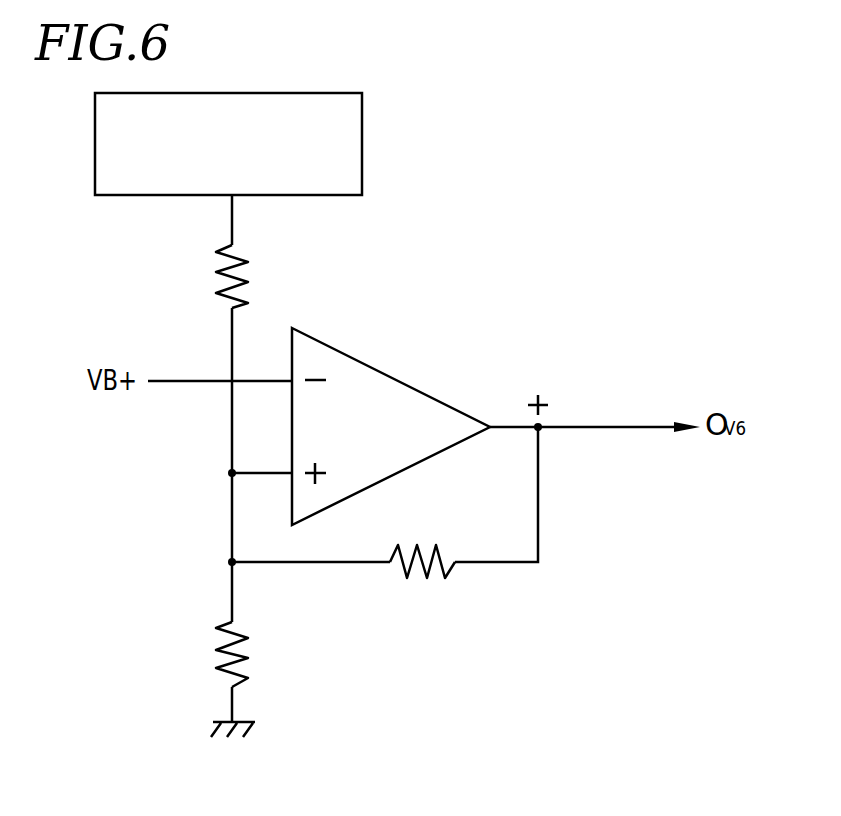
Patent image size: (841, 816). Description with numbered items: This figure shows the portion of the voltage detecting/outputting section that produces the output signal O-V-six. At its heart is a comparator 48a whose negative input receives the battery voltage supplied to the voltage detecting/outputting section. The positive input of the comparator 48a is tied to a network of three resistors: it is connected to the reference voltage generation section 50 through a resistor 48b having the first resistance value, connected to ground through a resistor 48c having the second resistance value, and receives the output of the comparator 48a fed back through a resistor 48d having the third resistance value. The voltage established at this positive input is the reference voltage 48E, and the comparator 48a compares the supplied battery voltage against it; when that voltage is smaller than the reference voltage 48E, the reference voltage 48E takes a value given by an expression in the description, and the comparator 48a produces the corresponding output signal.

The reference voltage generation section 50 is at (362, 165).
The comparator 48a is at (403, 382).
The resistor 48b is at (250, 270).
The resistor 48c is at (262, 660).
The resistor 48d is at (417, 585).
The reference voltage 48E is at (227, 475).